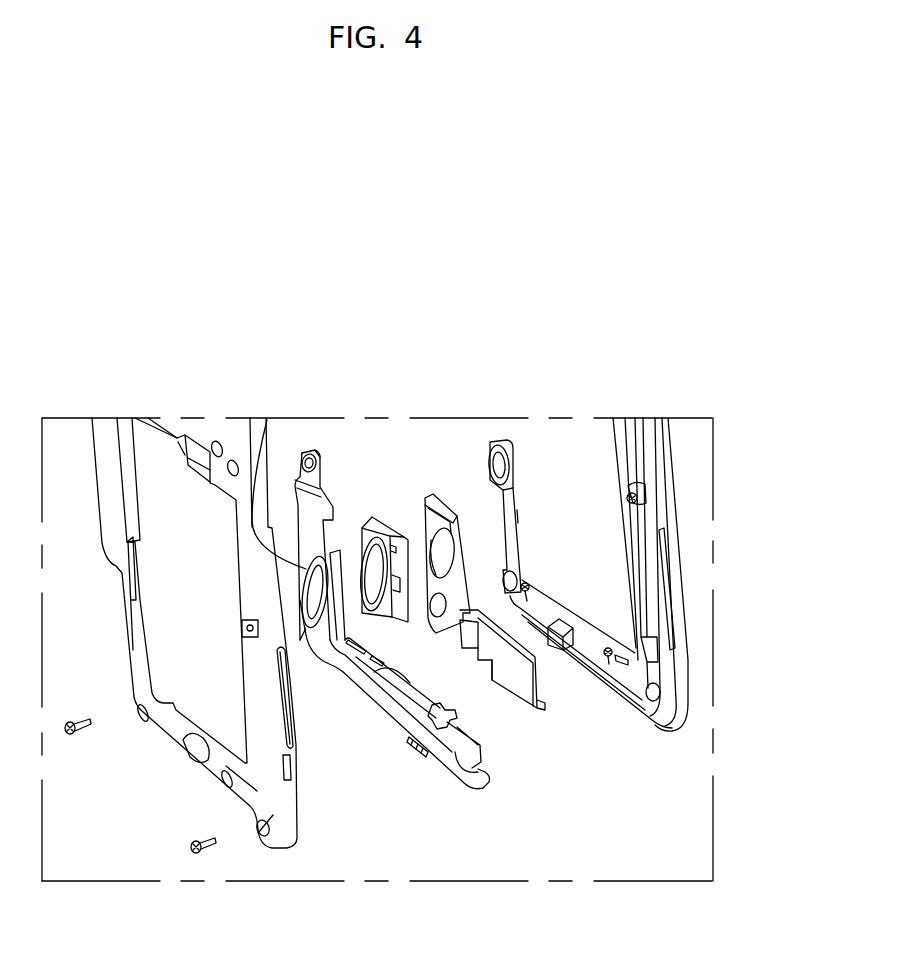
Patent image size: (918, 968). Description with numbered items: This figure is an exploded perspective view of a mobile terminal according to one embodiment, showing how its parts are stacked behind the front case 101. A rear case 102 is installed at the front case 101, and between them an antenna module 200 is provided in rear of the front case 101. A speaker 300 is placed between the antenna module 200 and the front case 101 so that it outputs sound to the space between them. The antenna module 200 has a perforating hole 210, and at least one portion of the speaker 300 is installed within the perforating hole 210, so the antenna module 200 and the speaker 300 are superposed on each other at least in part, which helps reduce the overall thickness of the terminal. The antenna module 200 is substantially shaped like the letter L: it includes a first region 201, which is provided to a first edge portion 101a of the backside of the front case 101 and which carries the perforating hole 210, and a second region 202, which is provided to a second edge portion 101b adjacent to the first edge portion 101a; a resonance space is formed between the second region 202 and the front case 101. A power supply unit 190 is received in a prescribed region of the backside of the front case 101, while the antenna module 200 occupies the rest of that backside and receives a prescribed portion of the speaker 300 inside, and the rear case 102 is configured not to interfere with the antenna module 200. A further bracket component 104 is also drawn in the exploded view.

The front case 101 is at (648, 683).
The first edge portion 101a is at (492, 526).
The second edge portion 101b is at (624, 684).
The rear case 102 is at (263, 836).
The mounting bracket 104 is at (416, 485).
The power supply unit 190 is at (564, 440).
The antenna module 200 is at (381, 654).
The first region 201 is at (300, 505).
The second region 202 is at (400, 731).
The perforating hole 210 is at (250, 418).
The speaker 300 is at (366, 503).